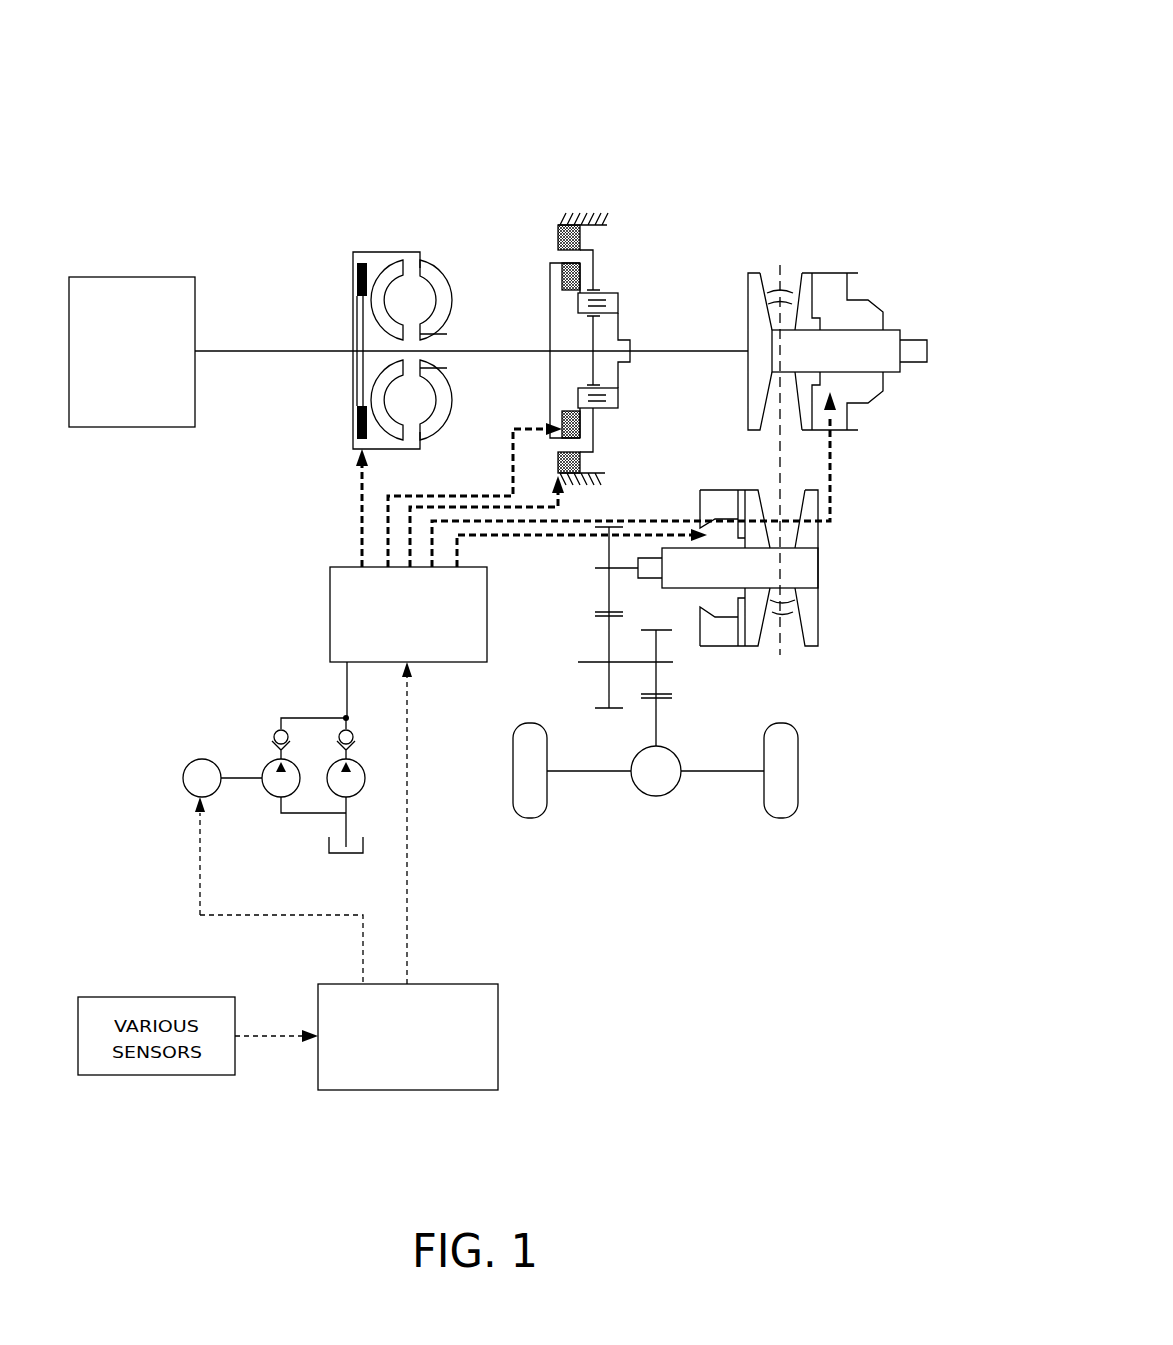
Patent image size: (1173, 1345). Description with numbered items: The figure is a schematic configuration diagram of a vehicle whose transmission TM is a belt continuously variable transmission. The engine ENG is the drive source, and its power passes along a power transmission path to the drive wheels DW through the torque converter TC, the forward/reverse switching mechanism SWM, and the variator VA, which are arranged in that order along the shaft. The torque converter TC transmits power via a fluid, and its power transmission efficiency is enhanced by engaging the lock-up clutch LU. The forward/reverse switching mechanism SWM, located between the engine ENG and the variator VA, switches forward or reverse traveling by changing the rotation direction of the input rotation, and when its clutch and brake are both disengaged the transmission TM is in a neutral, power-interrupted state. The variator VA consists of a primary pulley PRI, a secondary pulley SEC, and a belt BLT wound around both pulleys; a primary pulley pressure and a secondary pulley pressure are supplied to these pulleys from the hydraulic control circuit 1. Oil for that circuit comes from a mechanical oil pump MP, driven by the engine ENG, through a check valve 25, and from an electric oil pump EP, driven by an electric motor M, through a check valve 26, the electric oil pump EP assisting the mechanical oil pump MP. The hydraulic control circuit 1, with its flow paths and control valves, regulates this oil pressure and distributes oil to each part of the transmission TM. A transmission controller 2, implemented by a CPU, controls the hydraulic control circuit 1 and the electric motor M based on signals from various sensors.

The transmission TM is at (905, 80).
The engine ENG is at (128, 277).
The torque converter TC is at (397, 237).
The lock-up clutch LU is at (353, 435).
The forward/reverse switching mechanism SWM is at (561, 188).
The variator VA is at (817, 226).
The primary pulley PRI is at (884, 308).
The secondary pulley SEC is at (820, 597).
The belt BLT is at (787, 617).
The drive wheels DW is at (513, 771).
The hydraulic control circuit 1 is at (330, 624).
The transmission controller 2 is at (415, 1090).
The electric motor M is at (202, 759).
The electric oil pump EP is at (268, 793).
The mechanical oil pump MP is at (359, 793).
The check valve 25 is at (353, 733).
The check valve 26 is at (274, 732).